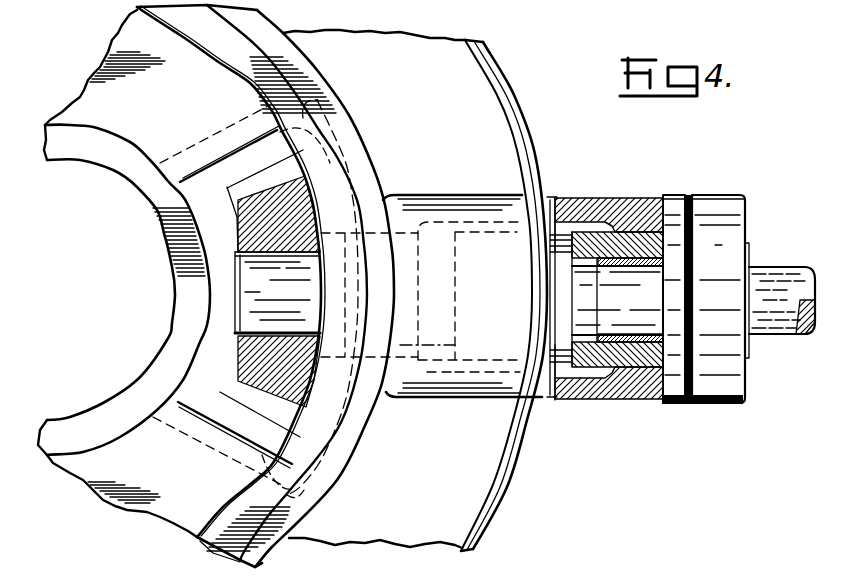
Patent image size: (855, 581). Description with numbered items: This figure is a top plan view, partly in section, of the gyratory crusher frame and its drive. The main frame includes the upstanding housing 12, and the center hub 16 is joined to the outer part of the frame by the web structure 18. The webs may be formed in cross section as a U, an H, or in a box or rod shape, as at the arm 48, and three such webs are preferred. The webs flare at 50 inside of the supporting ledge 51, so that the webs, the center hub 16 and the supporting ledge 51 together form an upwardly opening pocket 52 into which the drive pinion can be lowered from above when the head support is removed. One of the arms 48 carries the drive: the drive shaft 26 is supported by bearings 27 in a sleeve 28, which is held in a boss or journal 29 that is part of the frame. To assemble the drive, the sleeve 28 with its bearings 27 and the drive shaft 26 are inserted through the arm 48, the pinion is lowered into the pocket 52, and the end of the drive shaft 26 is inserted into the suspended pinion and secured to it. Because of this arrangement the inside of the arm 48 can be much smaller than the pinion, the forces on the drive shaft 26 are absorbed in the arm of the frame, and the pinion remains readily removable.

The upstanding housing 12 is at (497, 92).
The center hub 16 is at (180, 249).
The web structure 18 is at (117, 62).
The drive shaft 26 is at (588, 282).
The bearings 27 is at (633, 257).
The sleeve 28 is at (587, 355).
The boss or journal 29 is at (637, 383).
The arm 48 is at (440, 200).
The web flare 50 is at (226, 165).
The supporting ledge 51 is at (213, 553).
The pocket 52 is at (213, 346).